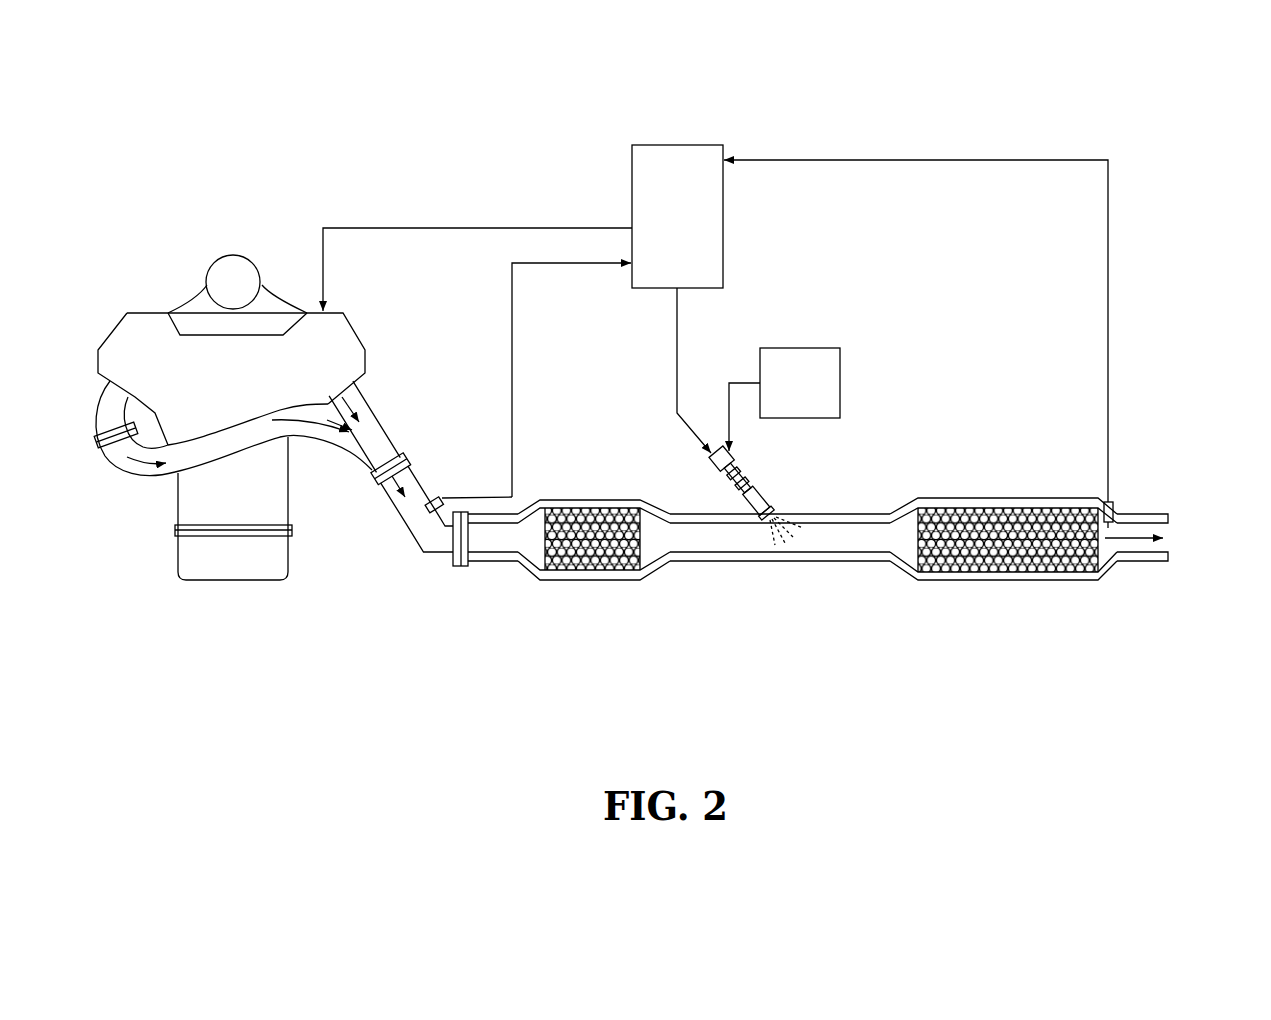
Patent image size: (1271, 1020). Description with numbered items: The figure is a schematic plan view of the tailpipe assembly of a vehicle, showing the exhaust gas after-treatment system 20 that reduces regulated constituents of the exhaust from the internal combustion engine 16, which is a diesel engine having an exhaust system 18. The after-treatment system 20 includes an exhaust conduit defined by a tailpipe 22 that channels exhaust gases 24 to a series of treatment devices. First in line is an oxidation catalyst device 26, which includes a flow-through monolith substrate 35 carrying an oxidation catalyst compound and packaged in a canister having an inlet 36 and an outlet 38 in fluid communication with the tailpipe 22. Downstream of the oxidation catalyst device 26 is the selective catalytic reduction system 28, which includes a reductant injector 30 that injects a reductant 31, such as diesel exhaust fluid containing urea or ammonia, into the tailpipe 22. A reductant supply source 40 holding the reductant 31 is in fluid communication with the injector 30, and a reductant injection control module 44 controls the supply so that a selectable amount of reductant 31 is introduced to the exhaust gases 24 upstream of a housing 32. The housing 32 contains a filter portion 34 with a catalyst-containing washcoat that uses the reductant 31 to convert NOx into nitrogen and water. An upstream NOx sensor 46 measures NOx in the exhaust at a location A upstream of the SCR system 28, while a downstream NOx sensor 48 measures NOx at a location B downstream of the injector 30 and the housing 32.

The internal combustion engine 16 is at (181, 295).
The exhaust system 18 is at (337, 448).
The exhaust gas after-treatment system 20 is at (462, 643).
The tailpipe 22 is at (380, 412).
The exhaust gases 24 is at (410, 481).
The oxidation catalyst device 26 is at (562, 585).
The selective catalytic reduction system 28 is at (813, 577).
The reductant injector 30 is at (771, 487).
The reductant 31 is at (775, 532).
The housing 32 is at (990, 588).
The filter portion 34 is at (975, 540).
The substrate 35 is at (590, 526).
The inlet 36 is at (461, 567).
The outlet 38 is at (670, 561).
The reductant supply source 40 is at (800, 348).
The reductant injection control module 44 is at (715, 323).
The upstream NOx sensor 46 is at (433, 493).
The downstream NOx sensor 48 is at (1117, 504).
The location A is at (422, 520).
The location B is at (1115, 513).